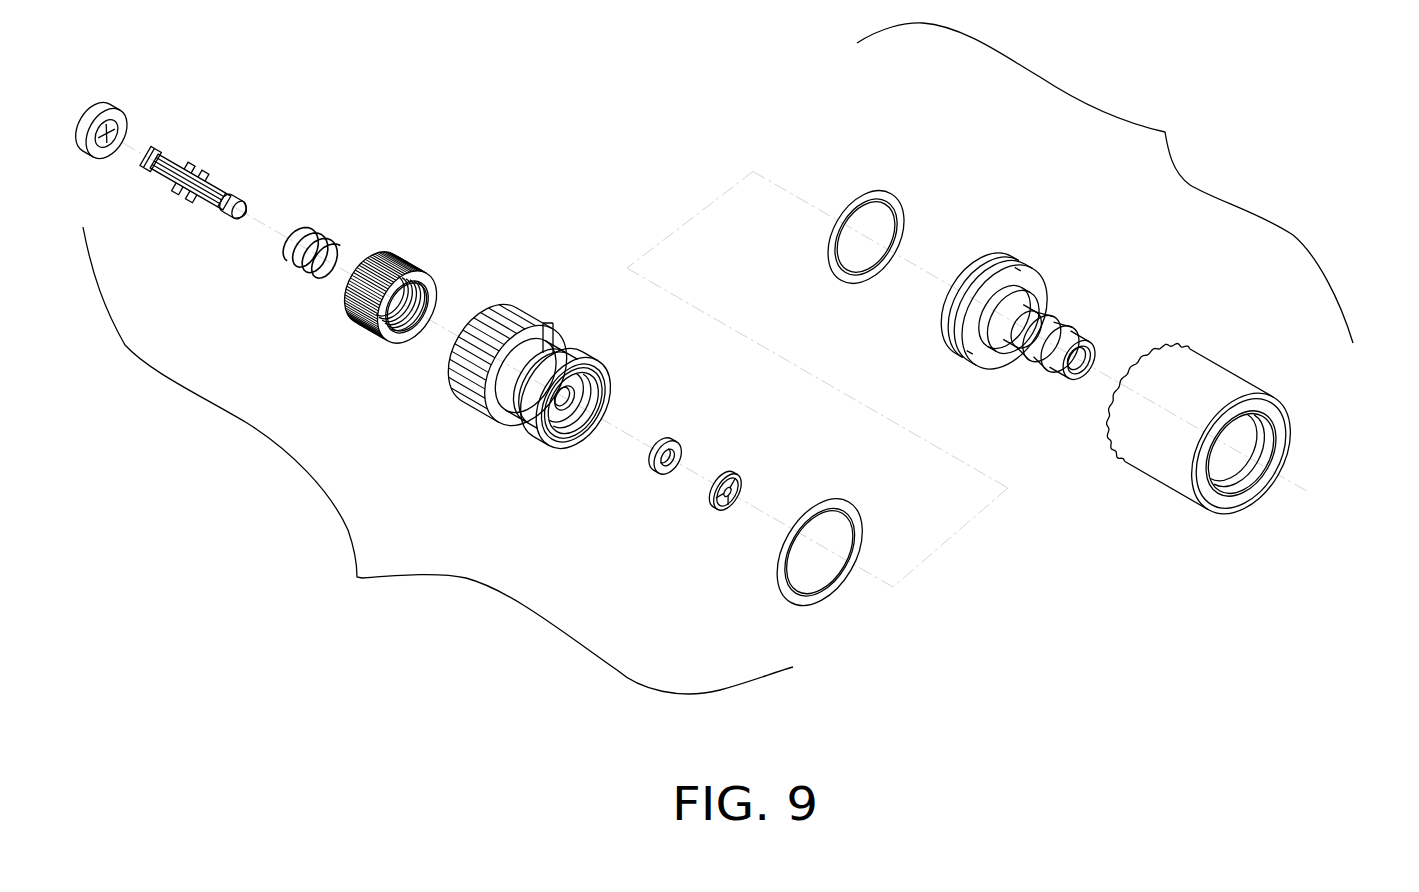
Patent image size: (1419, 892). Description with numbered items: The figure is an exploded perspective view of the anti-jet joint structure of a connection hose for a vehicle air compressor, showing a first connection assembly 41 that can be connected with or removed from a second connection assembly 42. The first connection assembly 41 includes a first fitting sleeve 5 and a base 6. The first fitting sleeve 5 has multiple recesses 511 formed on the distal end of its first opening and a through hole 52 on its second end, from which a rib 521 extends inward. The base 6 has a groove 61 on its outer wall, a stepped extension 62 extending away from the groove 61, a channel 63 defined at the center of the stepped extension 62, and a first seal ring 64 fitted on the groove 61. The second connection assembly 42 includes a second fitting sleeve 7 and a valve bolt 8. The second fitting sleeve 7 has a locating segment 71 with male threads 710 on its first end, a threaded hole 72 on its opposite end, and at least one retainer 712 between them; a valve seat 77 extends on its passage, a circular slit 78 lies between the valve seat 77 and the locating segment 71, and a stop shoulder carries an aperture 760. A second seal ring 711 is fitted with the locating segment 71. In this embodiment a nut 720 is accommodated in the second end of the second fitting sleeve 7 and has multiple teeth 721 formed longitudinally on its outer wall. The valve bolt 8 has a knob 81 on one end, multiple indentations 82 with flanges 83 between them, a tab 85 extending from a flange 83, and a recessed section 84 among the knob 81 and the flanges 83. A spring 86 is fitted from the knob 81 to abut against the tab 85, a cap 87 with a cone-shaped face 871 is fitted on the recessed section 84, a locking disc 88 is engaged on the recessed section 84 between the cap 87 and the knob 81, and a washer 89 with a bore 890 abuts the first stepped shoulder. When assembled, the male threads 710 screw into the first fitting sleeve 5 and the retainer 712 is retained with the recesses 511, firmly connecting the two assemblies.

The first fitting sleeve 5 is at (1169, 471).
The recesses 511 is at (1157, 347).
The through hole 52 is at (1254, 437).
The rib 521 is at (1253, 482).
The base 6 is at (973, 266).
The groove 61 is at (1002, 273).
The stepped extension 62 is at (1052, 320).
The channel 63 is at (1083, 350).
The first seal ring 64 is at (886, 192).
The second fitting sleeve 7 is at (478, 428).
The locating segment 71 is at (568, 441).
The male threads 710 is at (537, 437).
The second seal ring 711 is at (822, 587).
The retainer 712 is at (545, 328).
The threaded hole 72 is at (432, 290).
The nut 720 is at (392, 350).
The teeth 721 is at (405, 262).
The valve seat 77 is at (598, 437).
The circular slit 78 is at (580, 362).
The aperture 760 is at (607, 356).
The valve bolt 8 is at (166, 158).
The knob 81 is at (250, 214).
The indentations 82 is at (152, 170).
The flanges 83 is at (195, 203).
The recessed section 84 is at (236, 206).
The tab 85 is at (199, 176).
The spring 86 is at (330, 240).
The cap 87 is at (680, 449).
The cone-shaped face 871 is at (664, 472).
The locking disc 88 is at (731, 477).
The washer 89 is at (108, 108).
The bore 890 is at (110, 150).
The first connection assembly 41 is at (1105, 183).
The second connection assembly 42 is at (438, 460).